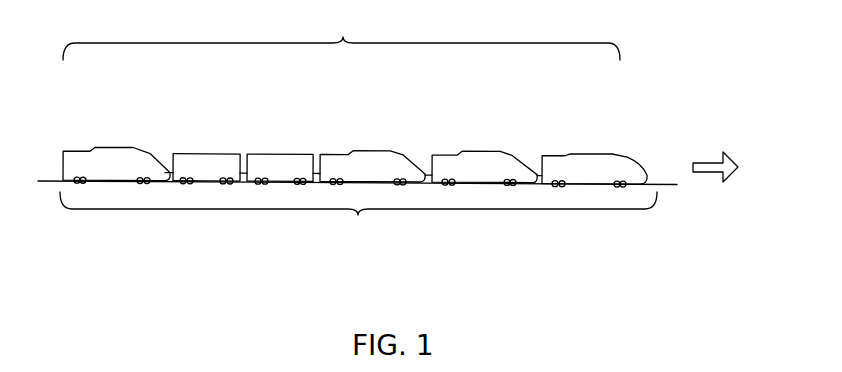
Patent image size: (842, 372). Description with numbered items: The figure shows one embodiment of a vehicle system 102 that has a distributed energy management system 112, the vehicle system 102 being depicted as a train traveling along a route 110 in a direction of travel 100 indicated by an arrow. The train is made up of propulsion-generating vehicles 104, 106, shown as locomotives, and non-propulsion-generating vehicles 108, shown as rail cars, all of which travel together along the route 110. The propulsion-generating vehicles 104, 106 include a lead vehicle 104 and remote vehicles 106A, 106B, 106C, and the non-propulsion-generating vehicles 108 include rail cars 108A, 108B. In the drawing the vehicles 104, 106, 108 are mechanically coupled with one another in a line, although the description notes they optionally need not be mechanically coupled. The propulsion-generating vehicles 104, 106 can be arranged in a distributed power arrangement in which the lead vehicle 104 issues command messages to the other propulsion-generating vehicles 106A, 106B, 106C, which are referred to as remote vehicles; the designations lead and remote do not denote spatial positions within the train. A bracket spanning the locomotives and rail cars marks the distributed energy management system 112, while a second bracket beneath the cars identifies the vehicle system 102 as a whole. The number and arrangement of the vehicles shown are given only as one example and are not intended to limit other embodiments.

The direction of travel 100 is at (708, 157).
The vehicle system 102 is at (358, 218).
The lead vehicle 104 is at (585, 150).
The propulsion-generating vehicles 106 is at (512, 130).
The remote vehicle 106A is at (473, 150).
The remote vehicle 106B is at (367, 150).
The remote vehicle 106C is at (108, 147).
The non-propulsion-generating vehicles 108 is at (317, 130).
The non-propulsion-generating vehicle 108A is at (279, 152).
The non-propulsion-generating vehicle 108B is at (206, 152).
The route 110 is at (662, 178).
The distributed energy management system 112 is at (341, 36).